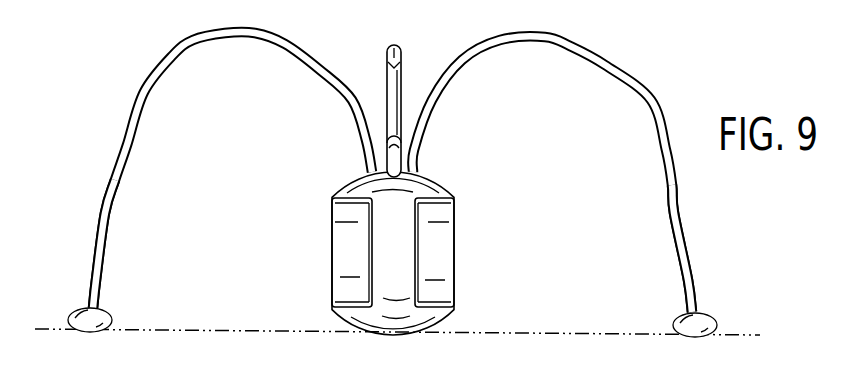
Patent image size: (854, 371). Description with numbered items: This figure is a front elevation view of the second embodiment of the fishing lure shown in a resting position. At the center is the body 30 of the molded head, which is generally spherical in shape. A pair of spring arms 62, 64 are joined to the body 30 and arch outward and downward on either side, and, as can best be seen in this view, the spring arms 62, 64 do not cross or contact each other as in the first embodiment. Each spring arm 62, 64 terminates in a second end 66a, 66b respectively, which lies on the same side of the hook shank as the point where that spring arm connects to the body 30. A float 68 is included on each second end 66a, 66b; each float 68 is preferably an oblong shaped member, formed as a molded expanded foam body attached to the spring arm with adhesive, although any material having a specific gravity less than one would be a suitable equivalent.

The body 30 is at (437, 183).
The spring arm 62 is at (146, 66).
The spring arm 64 is at (676, 94).
The second end 66a is at (697, 287).
The second end 66b is at (100, 296).
The float 68 is at (90, 332).